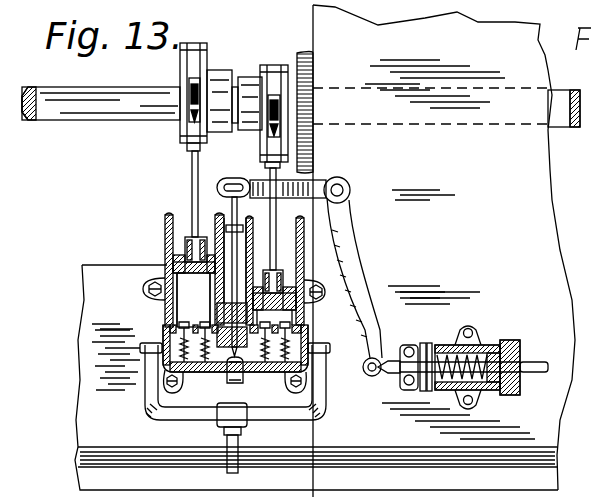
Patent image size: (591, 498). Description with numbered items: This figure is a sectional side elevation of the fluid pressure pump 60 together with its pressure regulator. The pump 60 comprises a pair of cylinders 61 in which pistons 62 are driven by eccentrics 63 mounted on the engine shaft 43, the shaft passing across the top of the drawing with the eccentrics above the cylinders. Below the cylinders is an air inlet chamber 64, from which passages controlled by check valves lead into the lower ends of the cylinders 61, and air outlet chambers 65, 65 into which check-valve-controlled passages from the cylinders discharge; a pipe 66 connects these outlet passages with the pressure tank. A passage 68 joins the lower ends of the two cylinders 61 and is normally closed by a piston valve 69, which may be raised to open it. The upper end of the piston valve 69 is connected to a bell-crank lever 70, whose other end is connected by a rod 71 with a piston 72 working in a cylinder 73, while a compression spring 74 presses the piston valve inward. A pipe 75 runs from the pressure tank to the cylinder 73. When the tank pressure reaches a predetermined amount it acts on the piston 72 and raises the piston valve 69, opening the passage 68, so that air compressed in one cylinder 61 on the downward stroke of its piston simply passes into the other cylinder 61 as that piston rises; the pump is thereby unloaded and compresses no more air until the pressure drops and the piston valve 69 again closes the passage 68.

The engine shaft 43 is at (132, 90).
The eccentrics 63 is at (211, 67).
The fluid pressure pump 60 is at (190, 186).
The pistons 62 is at (167, 255).
The cylinders 61 is at (190, 305).
The piston valve 69 is at (256, 182).
The bell-crank lever 70 is at (372, 268).
The rod 71 is at (403, 345).
The compression spring 74 is at (438, 388).
The piston 72 is at (498, 350).
The cylinder 73 is at (510, 395).
The pipe 75 is at (535, 365).
The passage 68 is at (220, 356).
The air inlet chamber 64 is at (248, 356).
The air outlet chambers 65 is at (160, 362).
The pipe 66 is at (215, 422).